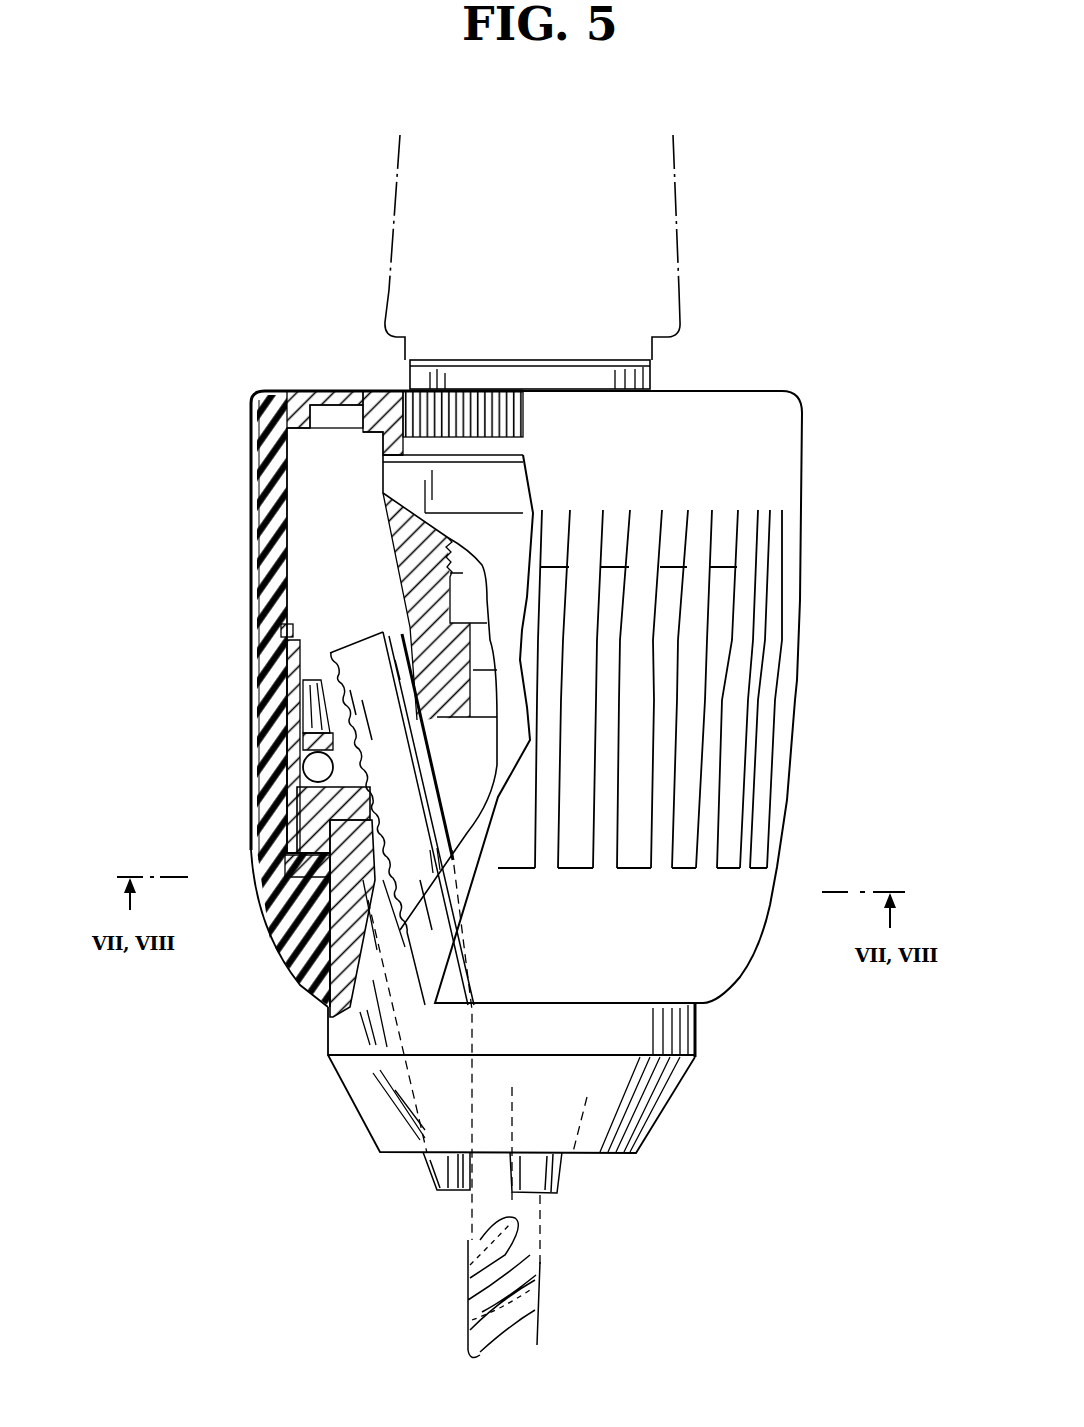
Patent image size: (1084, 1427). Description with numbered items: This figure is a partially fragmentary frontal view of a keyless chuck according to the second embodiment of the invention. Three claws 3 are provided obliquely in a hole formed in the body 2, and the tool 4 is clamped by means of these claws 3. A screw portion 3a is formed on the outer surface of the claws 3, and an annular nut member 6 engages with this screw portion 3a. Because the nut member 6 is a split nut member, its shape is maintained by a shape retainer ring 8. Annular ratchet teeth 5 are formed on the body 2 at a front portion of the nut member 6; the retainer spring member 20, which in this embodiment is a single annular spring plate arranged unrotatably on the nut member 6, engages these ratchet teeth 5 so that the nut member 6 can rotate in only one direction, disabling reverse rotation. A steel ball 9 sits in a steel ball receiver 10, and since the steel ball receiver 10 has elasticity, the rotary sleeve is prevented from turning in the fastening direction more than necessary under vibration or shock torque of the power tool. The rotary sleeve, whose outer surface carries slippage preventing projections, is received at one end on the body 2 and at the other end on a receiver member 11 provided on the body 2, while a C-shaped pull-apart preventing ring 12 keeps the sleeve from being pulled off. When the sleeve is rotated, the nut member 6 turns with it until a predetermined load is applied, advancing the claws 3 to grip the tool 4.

The body 2 is at (340, 1080).
The claws 3 is at (437, 1175).
The screw portion 3a is at (313, 997).
The tool 4 is at (468, 1302).
The ratchet teeth 5 is at (283, 968).
The nut member 6 is at (317, 802).
The shape retainer ring 8 is at (317, 640).
The steel ball 9 is at (310, 767).
The steel ball receiver 10 is at (320, 727).
The receiver member 11 is at (297, 397).
The pull-apart preventing ring 12 is at (317, 625).
The retainer spring member 20 is at (270, 918).